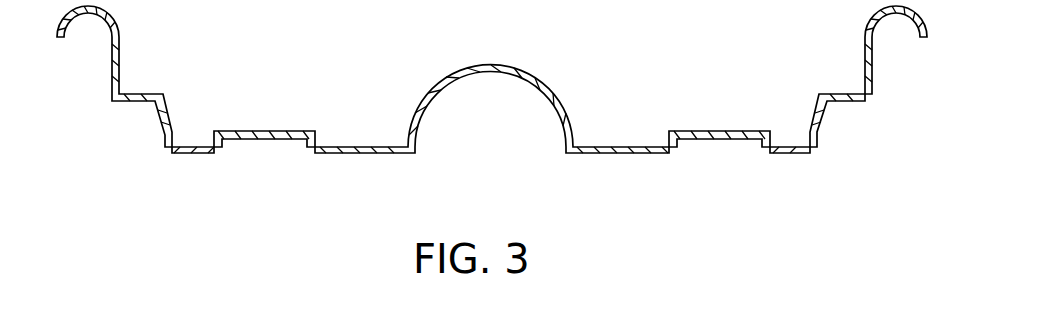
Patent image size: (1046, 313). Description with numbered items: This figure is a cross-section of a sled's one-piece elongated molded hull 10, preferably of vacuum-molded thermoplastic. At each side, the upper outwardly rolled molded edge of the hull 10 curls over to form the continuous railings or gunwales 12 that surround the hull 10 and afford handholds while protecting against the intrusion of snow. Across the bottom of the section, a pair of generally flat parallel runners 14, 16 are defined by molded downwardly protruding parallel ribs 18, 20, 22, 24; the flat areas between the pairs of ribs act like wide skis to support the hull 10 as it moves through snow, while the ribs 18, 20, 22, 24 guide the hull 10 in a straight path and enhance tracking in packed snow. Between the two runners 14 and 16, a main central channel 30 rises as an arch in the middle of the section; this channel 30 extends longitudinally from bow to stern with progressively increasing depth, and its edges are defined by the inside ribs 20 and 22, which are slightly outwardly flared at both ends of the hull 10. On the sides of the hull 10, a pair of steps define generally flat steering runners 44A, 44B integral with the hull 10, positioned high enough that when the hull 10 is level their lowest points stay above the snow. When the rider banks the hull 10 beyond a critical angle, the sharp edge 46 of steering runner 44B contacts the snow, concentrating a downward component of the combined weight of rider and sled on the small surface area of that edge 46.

The hull 10 is at (112, 62).
The gunwales 12 is at (925, 35).
The runner 14 is at (247, 140).
The runner 16 is at (701, 140).
The rib 18 is at (192, 152).
The inside rib 20 is at (330, 153).
The inside rib 22 is at (590, 155).
The rib 24 is at (783, 153).
The main central channel 30 is at (506, 74).
The steering runner 44A is at (125, 110).
The steering runner 44B is at (847, 108).
The sharp edge 46 is at (872, 102).